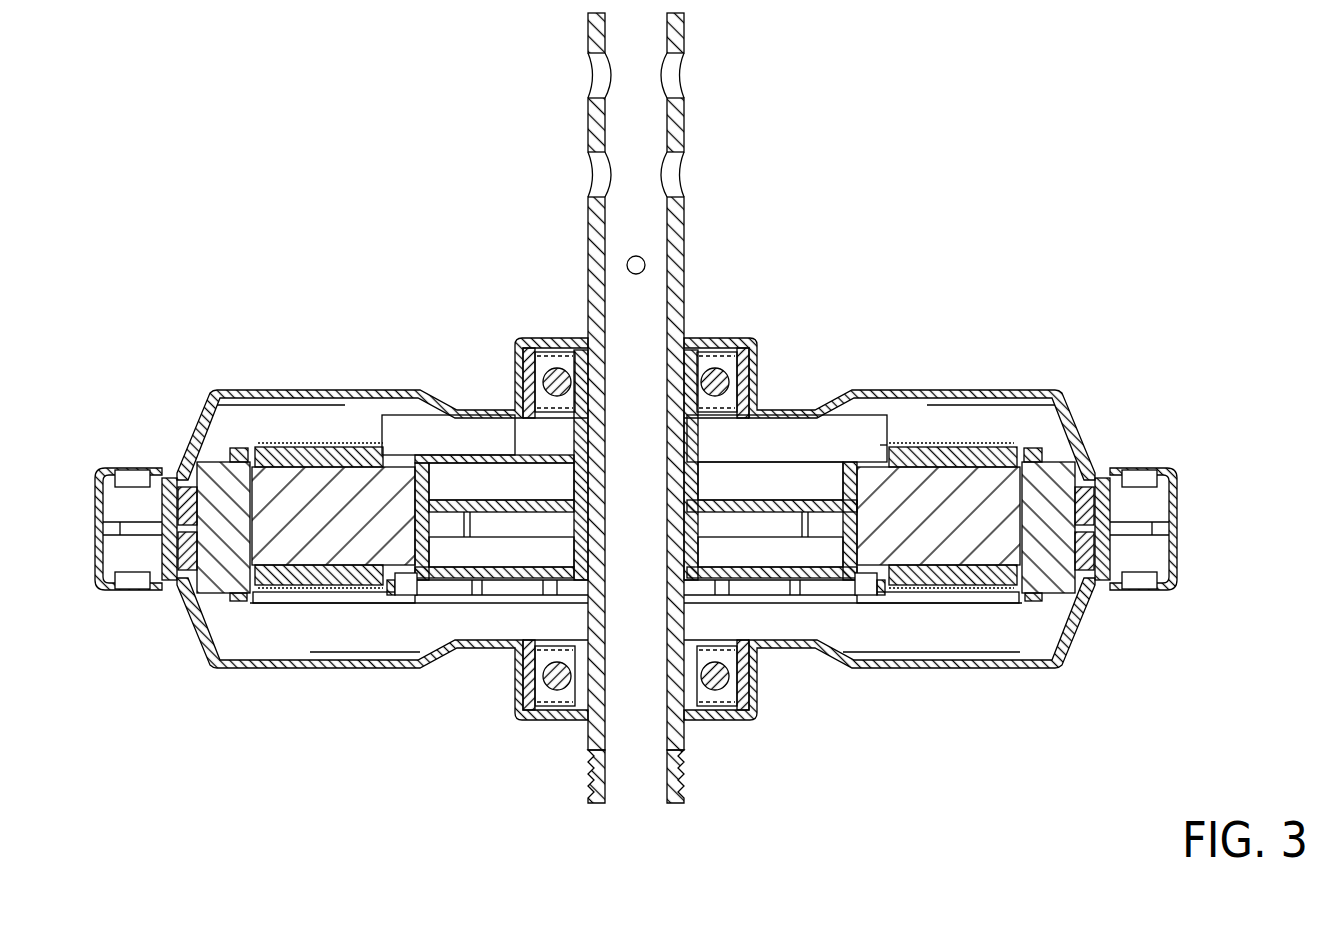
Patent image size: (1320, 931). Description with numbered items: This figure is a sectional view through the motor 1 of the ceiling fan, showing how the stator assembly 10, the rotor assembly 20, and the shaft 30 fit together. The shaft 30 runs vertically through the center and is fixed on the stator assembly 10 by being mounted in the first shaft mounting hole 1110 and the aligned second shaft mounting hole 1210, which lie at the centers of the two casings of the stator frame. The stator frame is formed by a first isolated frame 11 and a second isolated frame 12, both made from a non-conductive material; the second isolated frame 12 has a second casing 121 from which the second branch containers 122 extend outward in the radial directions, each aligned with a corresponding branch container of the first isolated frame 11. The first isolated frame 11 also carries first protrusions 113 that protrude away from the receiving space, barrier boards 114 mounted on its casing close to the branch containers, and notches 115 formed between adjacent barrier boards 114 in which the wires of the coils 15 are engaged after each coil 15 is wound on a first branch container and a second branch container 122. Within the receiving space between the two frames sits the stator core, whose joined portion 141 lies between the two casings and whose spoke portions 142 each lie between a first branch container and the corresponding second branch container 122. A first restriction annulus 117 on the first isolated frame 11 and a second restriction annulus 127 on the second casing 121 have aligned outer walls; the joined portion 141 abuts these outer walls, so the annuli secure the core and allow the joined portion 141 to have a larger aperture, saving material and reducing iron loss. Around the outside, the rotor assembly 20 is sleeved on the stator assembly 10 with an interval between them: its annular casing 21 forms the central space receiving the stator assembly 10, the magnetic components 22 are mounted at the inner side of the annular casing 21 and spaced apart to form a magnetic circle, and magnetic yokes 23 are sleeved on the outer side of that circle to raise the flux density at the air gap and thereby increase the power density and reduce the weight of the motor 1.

The motor 1 is at (213, 137).
The stator assembly 10 is at (952, 437).
The first isolated frame 11 is at (807, 428).
The second isolated frame 12 is at (435, 447).
The second casing 121 is at (465, 468).
The second shaft mounting hole 1210 is at (593, 412).
The second branch container 122 is at (260, 497).
The first protrusion 113 is at (1055, 585).
The barrier board 114 is at (405, 590).
The notch 115 is at (385, 595).
The first restriction annulus 117 is at (865, 572).
The first shaft mounting hole 1110 is at (587, 580).
The second restriction annulus 127 is at (872, 467).
The joined portion 141 is at (883, 557).
The spoke portion 142 is at (1010, 527).
The coil 15 is at (317, 445).
The rotor assembly 20 is at (1125, 502).
The annular casing 21 is at (1105, 478).
The magnetic component 22 is at (1078, 622).
The magnetic yoke 23 is at (1106, 593).
The shaft 30 is at (623, 125).